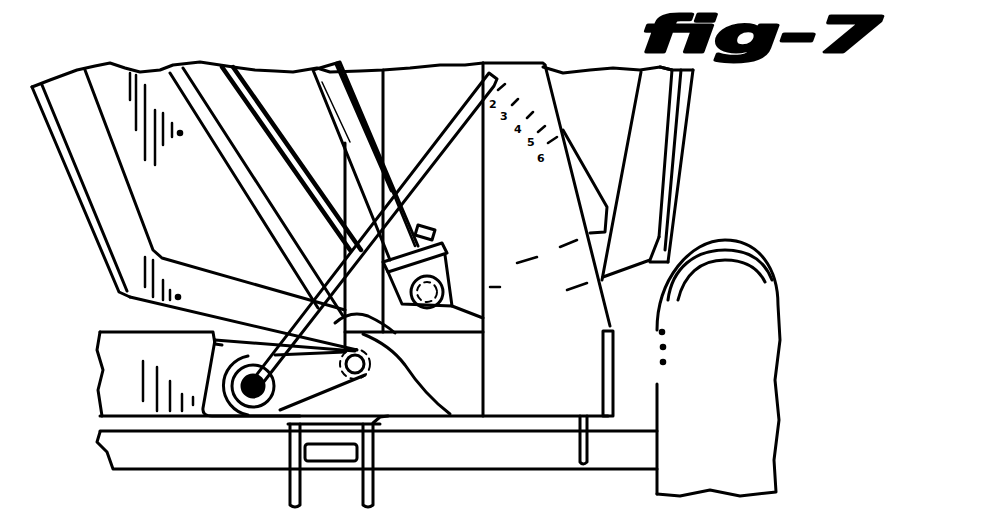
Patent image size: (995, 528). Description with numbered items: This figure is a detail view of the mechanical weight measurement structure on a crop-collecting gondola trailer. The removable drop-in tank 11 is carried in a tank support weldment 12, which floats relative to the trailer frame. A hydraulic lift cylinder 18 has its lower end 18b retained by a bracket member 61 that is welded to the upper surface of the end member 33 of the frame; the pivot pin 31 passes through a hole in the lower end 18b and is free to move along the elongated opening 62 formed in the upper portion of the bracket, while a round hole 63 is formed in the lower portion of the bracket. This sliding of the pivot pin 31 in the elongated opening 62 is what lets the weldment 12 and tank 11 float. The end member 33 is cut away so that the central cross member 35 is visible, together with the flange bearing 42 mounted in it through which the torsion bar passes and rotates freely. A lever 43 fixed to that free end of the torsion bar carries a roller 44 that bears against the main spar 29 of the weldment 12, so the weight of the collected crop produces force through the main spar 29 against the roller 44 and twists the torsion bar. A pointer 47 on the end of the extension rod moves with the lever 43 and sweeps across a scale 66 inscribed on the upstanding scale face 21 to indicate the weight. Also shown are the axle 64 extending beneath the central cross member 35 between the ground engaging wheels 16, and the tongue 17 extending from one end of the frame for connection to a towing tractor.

The drop-in tank 11 is at (628, 91).
The tank support weldment 12 is at (680, 163).
The wheels 16 is at (728, 240).
The tongue 17 is at (373, 492).
The hydraulic lift cylinder 18 is at (326, 93).
The lower end of hydraulic lift cylinder 18b is at (440, 231).
The scale face 21 is at (567, 185).
The main spar 29 is at (368, 362).
The pivot pin 31 is at (465, 290).
The end member 33 is at (613, 372).
The central cross member 35 is at (117, 337).
The flange bearing 42 is at (217, 337).
The lever arm 43 is at (285, 389).
The roller 44 is at (365, 419).
The pointer 47 is at (460, 112).
The bracket member 61 is at (483, 382).
The elongated opening 62 is at (480, 321).
The round hole 63 is at (485, 351).
The axle 64 is at (155, 457).
The scale 66 is at (559, 52).